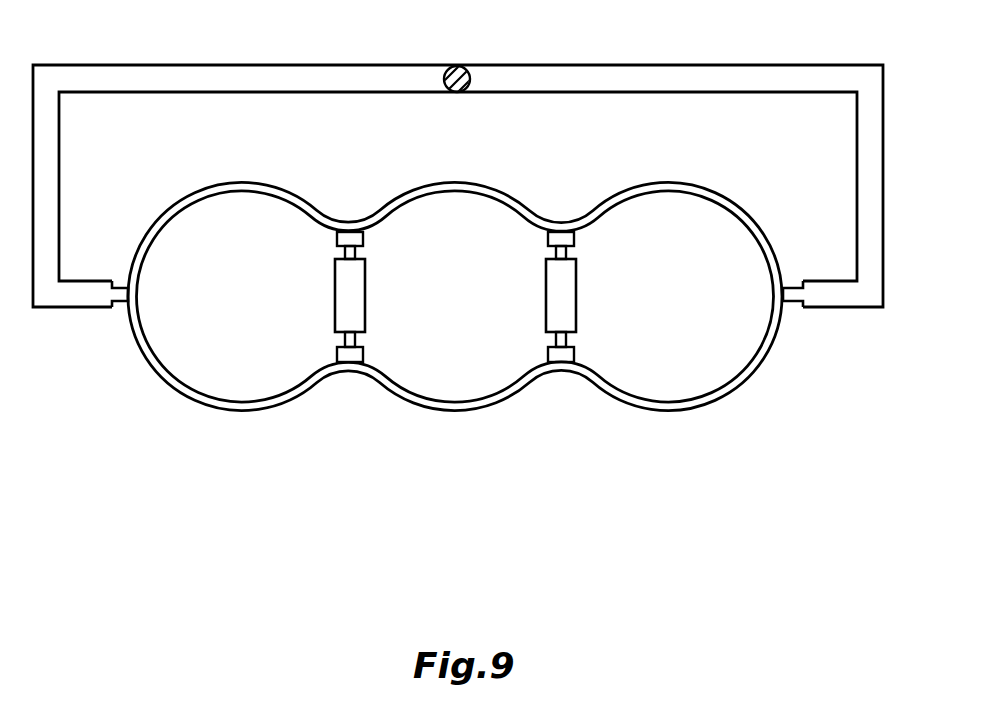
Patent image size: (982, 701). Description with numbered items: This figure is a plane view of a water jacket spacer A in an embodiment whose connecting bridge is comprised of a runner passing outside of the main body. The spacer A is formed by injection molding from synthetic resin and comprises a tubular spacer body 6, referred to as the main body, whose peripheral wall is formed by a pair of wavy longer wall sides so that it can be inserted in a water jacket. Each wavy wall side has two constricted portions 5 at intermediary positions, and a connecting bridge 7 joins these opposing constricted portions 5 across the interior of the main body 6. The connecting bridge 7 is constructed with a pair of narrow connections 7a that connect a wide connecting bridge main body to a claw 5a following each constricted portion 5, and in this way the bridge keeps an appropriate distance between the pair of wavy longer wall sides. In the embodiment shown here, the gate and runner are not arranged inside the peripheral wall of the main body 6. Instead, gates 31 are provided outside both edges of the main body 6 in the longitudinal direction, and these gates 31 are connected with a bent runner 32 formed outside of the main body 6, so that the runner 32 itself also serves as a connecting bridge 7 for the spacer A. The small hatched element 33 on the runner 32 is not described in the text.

The constricted portion 5 is at (349, 226).
The claw 5a is at (338, 242).
The tubular spacer body 6 is at (652, 186).
The connecting bridge 7 is at (333, 297).
The narrow connection 7a is at (357, 253).
The gate 31 is at (118, 294).
The bent runner 32 is at (696, 80).
The valve 33 is at (455, 66).
The spacer A is at (472, 285).